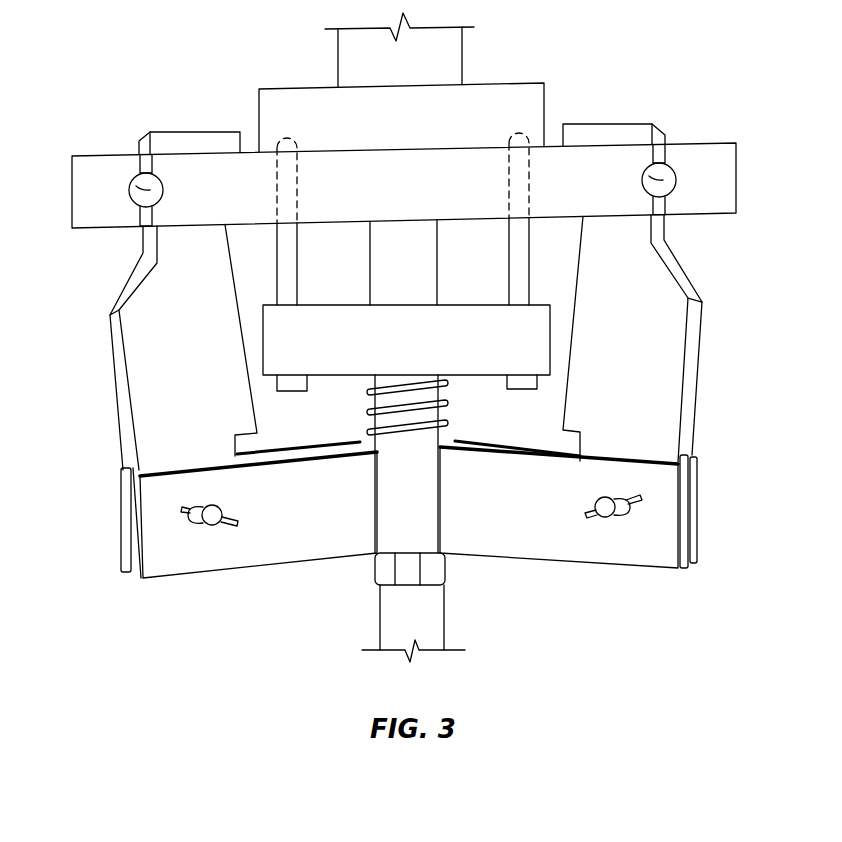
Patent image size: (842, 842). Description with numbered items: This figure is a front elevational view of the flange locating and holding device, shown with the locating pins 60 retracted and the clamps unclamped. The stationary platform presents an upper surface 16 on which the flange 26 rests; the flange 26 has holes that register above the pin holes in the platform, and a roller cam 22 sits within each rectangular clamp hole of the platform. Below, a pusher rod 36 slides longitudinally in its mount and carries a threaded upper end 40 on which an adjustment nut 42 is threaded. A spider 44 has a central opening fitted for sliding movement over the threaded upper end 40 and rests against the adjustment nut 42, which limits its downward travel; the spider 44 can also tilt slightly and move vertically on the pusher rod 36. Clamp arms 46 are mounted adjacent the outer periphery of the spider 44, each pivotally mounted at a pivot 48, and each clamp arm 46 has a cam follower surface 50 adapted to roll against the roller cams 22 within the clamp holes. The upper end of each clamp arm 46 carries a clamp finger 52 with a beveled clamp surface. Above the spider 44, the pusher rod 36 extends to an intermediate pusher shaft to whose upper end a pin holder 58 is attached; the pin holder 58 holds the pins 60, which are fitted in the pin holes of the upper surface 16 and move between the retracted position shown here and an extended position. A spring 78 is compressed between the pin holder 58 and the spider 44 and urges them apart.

The upper surface 16 is at (718, 143).
The roller cam 22 is at (142, 192).
The flange 26 is at (270, 105).
The pusher rod 36 is at (385, 648).
The threaded upper end 40 is at (378, 588).
The adjustment nut 42 is at (447, 572).
The spider 44 is at (120, 536).
The clamp arm 46 is at (113, 351).
The pivot 48 is at (230, 509).
The cam follower surface 50 is at (126, 283).
The clamp finger 52 is at (164, 132).
The pin holder 58 is at (258, 330).
The pins 60 is at (275, 184).
The spring 78 is at (372, 433).